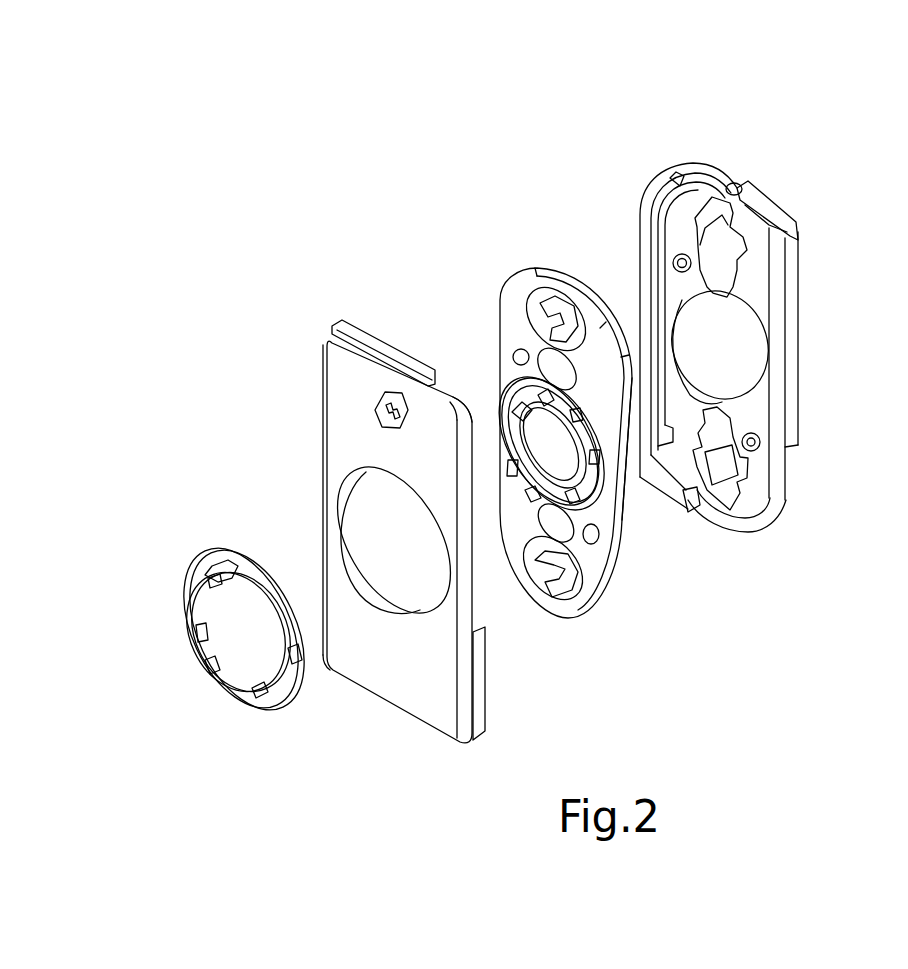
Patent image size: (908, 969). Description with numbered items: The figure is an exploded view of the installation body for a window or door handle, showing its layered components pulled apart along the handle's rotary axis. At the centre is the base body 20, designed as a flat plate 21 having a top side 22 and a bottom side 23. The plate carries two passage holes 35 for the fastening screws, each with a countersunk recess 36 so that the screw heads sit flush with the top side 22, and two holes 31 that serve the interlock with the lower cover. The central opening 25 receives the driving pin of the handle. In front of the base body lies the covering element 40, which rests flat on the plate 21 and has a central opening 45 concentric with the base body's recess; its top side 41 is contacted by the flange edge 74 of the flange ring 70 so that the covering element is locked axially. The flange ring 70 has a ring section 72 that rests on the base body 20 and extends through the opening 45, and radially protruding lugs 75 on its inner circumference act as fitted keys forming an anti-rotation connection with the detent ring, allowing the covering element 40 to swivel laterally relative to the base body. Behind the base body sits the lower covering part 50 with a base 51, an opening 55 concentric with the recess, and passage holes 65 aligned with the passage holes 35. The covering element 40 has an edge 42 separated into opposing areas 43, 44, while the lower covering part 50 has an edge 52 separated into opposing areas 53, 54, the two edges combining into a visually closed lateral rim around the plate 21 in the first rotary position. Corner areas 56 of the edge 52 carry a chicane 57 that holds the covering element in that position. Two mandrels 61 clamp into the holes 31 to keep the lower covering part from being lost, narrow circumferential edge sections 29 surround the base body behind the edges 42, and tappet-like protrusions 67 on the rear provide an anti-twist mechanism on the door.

The base body 20 is at (569, 417).
The plate 21 is at (500, 315).
The top side 22 is at (601, 590).
The bottom side 23 is at (630, 537).
The central opening 25 is at (532, 348).
The circumferential edge sections 29 is at (660, 217).
The holes 31 is at (516, 354).
The passage holes 35 is at (565, 312).
The countersunk recess 36 is at (578, 350).
The covering element 40 is at (390, 523).
The top side 41 is at (407, 673).
The edge 42 is at (352, 333).
The area 43 is at (453, 387).
The area 44 is at (313, 560).
The central opening 45 is at (390, 572).
The lower covering part 50 is at (751, 345).
The base 51 is at (743, 290).
The edge 52 is at (650, 290).
The area 53 is at (675, 172).
The area 54 is at (785, 532).
The opening 55 is at (745, 358).
The corner areas 56 is at (792, 224).
The chicane 57 is at (771, 248).
The mandrels 61 is at (684, 256).
The passage holes 65 is at (717, 240).
The tappet-like protrusions 67 is at (742, 180).
The flange ring 70 is at (204, 626).
The ring section 72 is at (223, 667).
The flange edge 74 is at (213, 565).
The lugs 75 is at (212, 580).